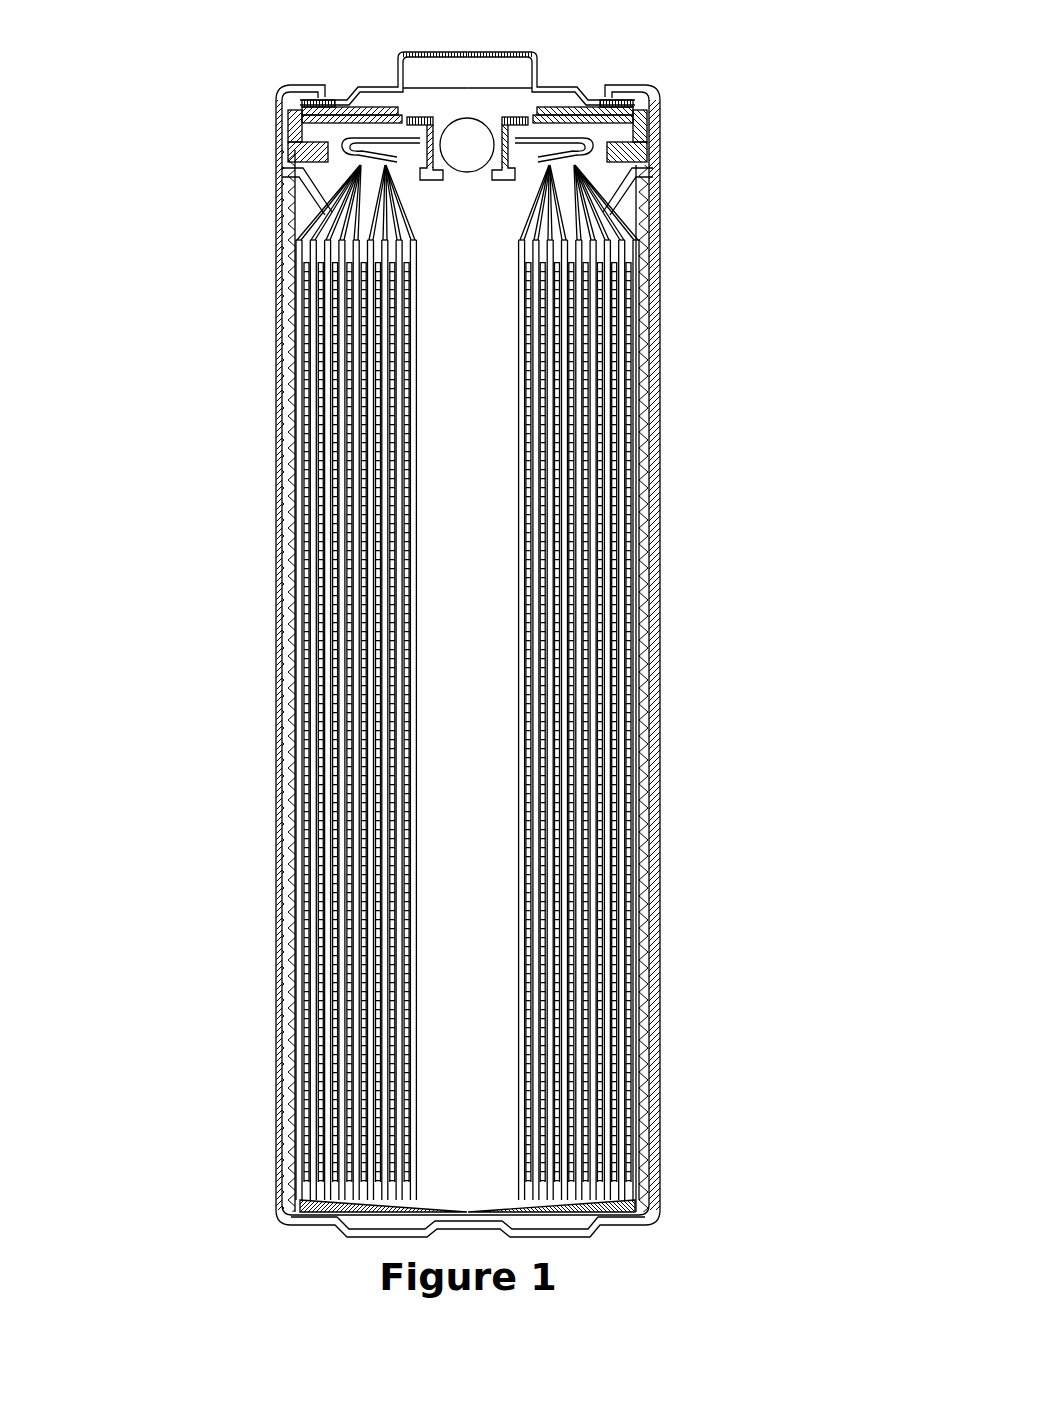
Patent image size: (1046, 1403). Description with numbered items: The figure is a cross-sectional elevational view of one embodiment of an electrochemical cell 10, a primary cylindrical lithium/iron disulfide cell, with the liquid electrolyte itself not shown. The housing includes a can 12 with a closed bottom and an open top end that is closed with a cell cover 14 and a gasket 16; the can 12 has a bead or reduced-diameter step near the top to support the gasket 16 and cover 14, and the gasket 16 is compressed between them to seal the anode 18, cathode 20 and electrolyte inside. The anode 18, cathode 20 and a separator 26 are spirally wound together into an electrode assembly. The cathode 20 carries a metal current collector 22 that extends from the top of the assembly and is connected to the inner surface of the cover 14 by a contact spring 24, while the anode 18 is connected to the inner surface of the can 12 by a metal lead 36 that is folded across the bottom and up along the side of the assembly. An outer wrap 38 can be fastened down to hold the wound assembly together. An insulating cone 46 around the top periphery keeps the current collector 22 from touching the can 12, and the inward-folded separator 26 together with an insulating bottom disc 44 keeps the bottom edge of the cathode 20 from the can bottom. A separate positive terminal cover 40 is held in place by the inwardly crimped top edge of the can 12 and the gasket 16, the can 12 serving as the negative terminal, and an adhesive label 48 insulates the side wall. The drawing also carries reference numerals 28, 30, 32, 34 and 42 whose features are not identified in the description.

The cell 10 is at (248, 523).
The can 12 is at (403, 1230).
The cell cover 14 is at (636, 143).
The gasket 16 is at (292, 155).
The anode 18 is at (590, 388).
The cathode 20 is at (567, 357).
The metal current collector 22 is at (576, 182).
The contact spring 24 is at (575, 130).
The separator 26 is at (481, 186).
The tab holder 28 is at (612, 168).
The tab bundle 30 is at (556, 190).
The vent ball 32 is at (467, 140).
The collector plate 34 is at (515, 118).
The metal lead 36 is at (650, 800).
The outer wrap 38 is at (651, 580).
The positive terminal cover 40 is at (393, 80).
The seal 42 is at (318, 110).
The bottom disc 44 is at (562, 1200).
The insulating cone 46 is at (312, 222).
The adhesive label 48 is at (287, 355).